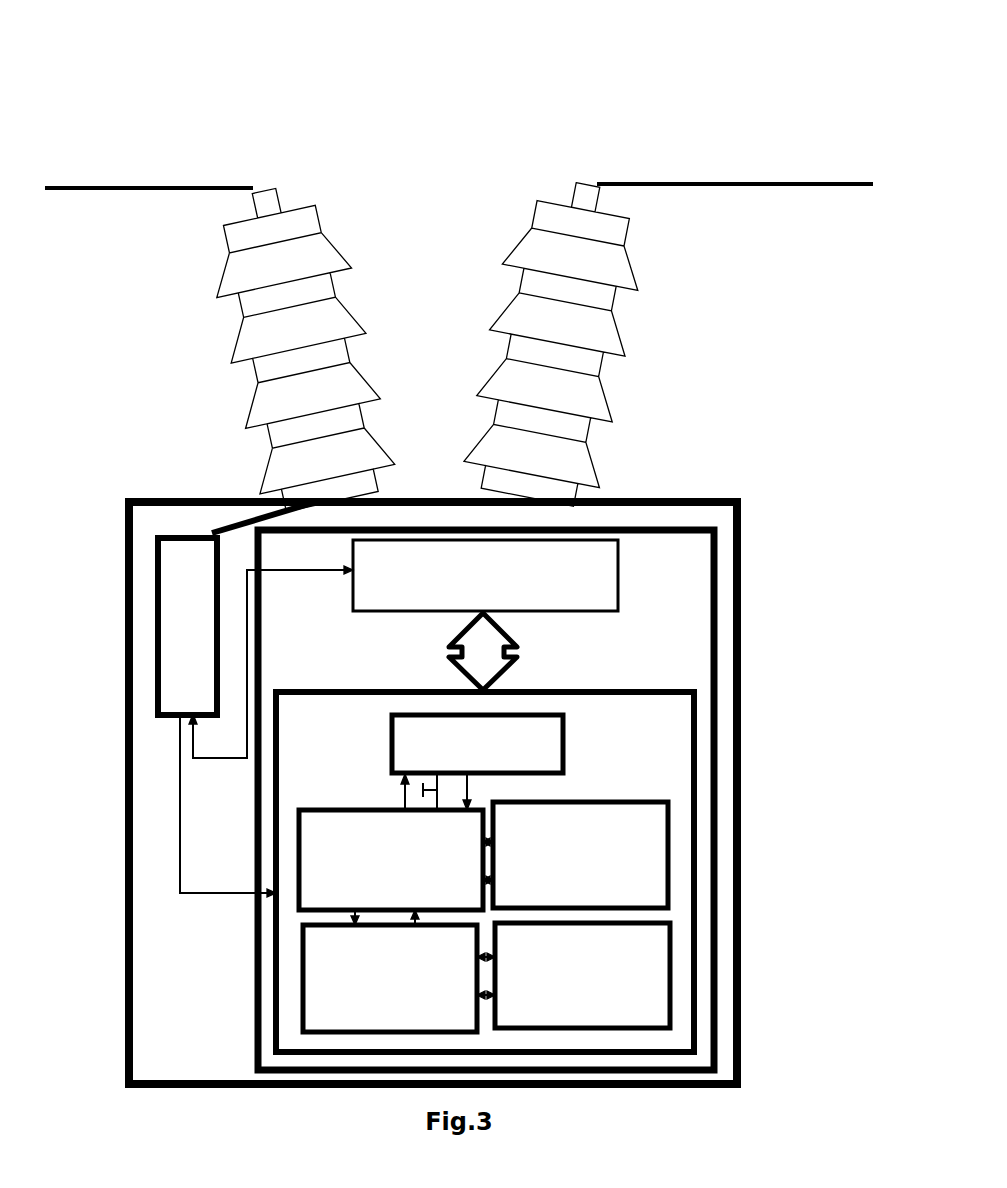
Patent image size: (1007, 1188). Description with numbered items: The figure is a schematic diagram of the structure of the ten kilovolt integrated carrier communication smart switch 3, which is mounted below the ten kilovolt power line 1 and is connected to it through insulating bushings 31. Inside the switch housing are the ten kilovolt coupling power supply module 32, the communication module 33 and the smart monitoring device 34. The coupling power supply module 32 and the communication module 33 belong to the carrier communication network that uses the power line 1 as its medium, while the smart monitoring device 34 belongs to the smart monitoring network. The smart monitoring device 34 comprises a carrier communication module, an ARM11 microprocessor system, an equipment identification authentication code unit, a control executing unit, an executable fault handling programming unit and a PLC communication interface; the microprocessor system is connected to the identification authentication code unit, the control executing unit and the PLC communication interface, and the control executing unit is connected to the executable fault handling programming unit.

The 10 kV power line 1 is at (459, 98).
The 10 kV integrated carrier communication smart switch 3 is at (488, 546).
The insulator 31 is at (426, 262).
The 10 kV coupling power supply module 32 is at (179, 597).
The communication module 33 is at (607, 472).
The smart monitoring device 34 is at (574, 872).